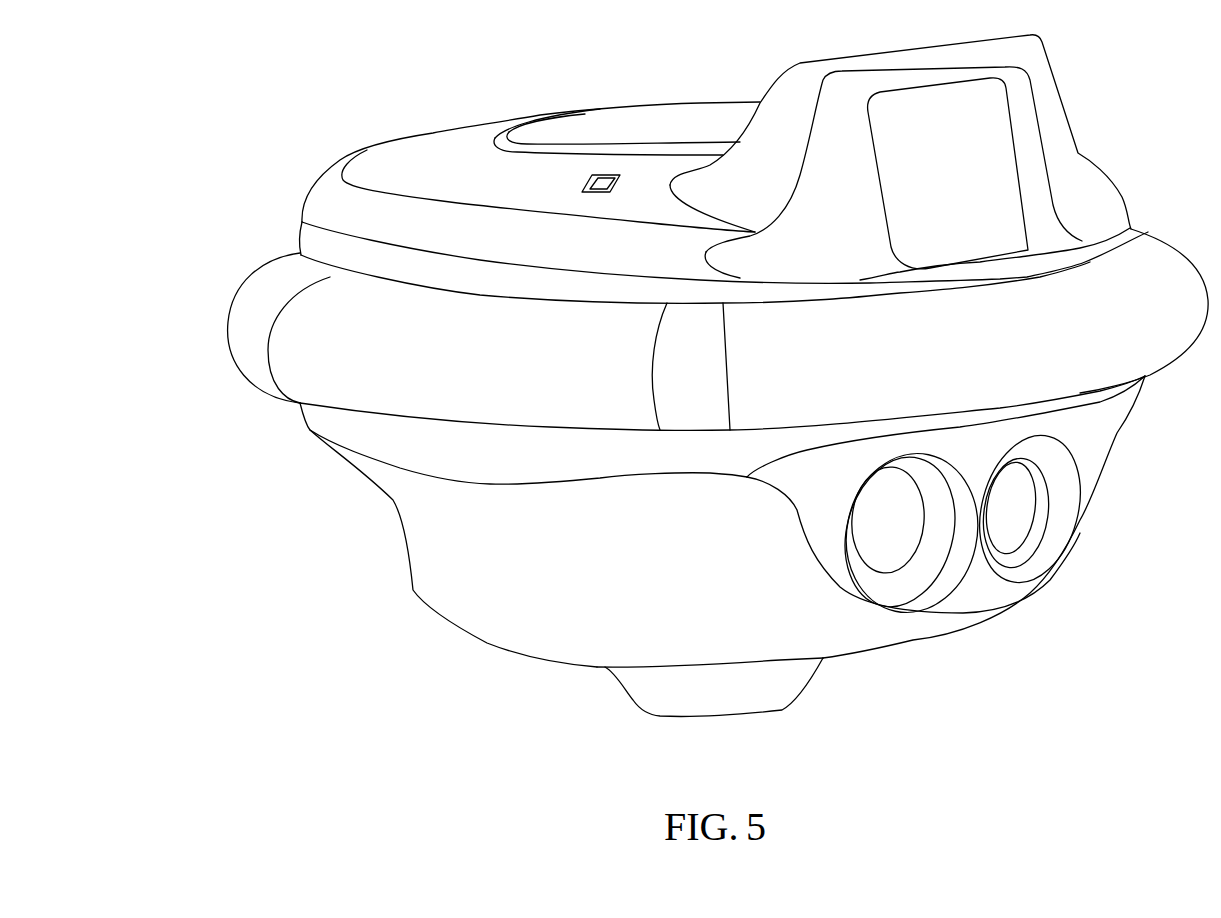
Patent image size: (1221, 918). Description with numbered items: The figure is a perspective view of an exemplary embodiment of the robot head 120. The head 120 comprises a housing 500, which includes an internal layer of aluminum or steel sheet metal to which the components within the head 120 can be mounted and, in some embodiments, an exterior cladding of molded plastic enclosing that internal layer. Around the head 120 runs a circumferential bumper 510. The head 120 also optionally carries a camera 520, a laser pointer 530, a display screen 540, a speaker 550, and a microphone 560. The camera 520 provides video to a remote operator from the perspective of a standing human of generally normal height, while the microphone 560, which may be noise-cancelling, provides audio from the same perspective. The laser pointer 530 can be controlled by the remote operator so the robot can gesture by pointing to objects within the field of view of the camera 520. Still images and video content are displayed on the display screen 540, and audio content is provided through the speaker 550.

The head 120 is at (256, 119).
The housing 500 is at (413, 592).
The circumferential bumper 510 is at (245, 280).
The camera 520 is at (1012, 503).
The laser pointer 530 is at (897, 527).
The display screen 540 is at (995, 137).
The speaker 550 is at (657, 117).
The microphone 560 is at (602, 180).